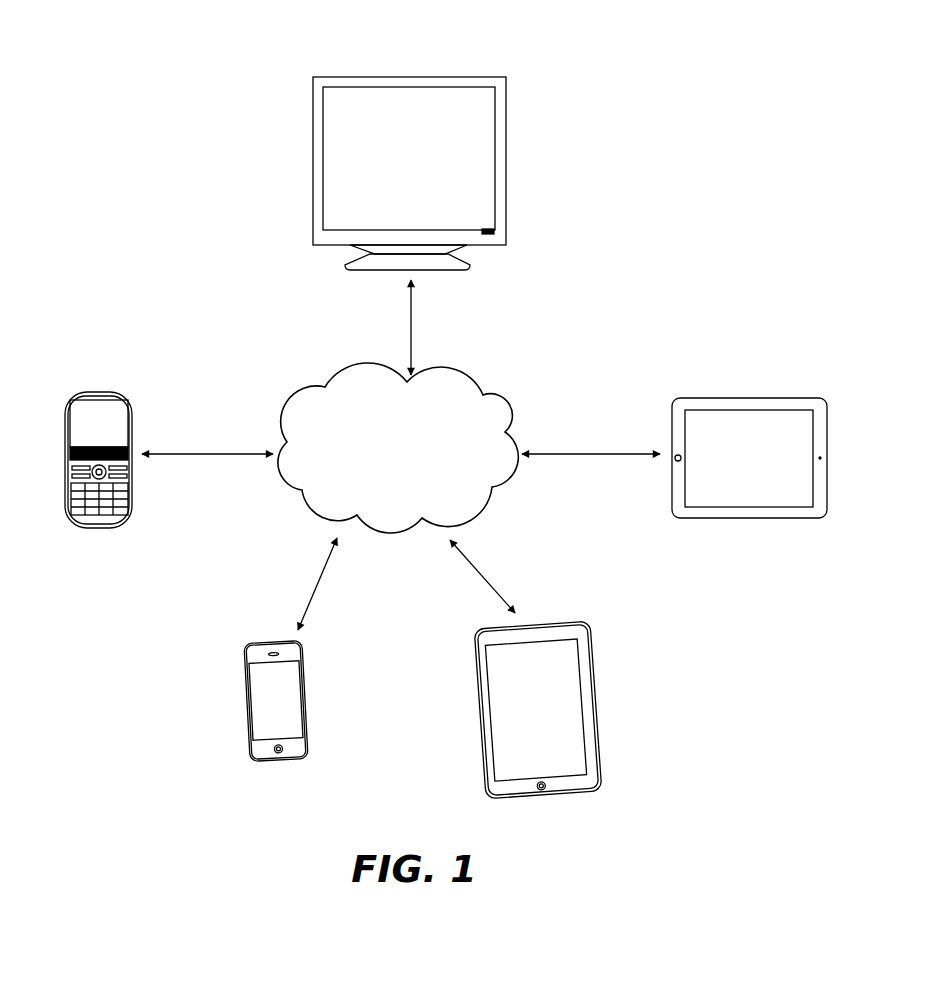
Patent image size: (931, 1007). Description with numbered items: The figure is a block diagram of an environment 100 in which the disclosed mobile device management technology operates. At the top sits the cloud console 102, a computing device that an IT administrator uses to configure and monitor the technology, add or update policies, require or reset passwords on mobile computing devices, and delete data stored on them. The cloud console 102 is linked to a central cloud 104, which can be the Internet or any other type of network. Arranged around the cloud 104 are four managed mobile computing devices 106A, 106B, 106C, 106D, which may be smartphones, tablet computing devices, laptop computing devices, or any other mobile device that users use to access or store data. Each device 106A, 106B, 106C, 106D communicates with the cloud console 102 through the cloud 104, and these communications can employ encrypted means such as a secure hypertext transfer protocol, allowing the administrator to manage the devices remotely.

The environment 100 is at (694, 204).
The cloud console 102 is at (409, 202).
The cloud 104 is at (398, 439).
The computing device 106A is at (162, 476).
The computing device 106B is at (241, 649).
The computing device 106C is at (573, 668).
The computing device 106D is at (674, 475).